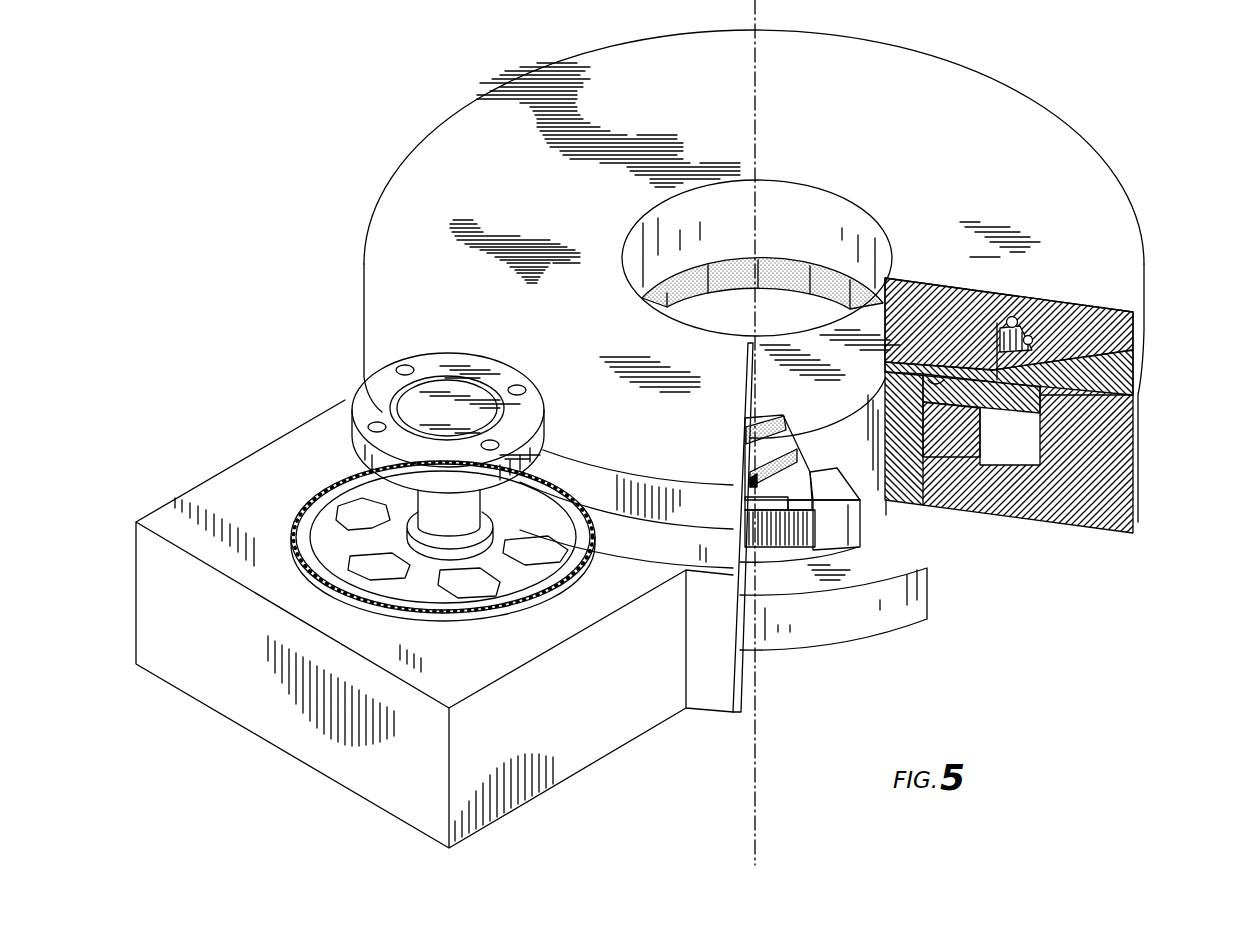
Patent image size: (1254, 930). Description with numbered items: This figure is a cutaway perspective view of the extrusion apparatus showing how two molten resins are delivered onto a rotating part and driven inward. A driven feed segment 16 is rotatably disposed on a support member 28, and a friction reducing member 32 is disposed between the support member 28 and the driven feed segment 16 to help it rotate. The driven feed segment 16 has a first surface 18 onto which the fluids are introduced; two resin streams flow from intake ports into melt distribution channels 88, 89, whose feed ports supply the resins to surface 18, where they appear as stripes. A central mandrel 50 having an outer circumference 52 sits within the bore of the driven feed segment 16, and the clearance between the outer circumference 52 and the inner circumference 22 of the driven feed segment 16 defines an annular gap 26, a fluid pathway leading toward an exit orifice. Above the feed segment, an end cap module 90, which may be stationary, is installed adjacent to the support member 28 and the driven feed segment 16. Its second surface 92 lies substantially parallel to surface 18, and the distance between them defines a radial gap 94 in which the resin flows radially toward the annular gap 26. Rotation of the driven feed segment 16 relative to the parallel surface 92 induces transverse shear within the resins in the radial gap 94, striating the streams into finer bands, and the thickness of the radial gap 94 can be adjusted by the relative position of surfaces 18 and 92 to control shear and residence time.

The driven feed segment 16 is at (881, 512).
The first surface 18 is at (794, 478).
The inner circumference 22 is at (788, 280).
The annular gap 26 is at (887, 516).
The support member 28 is at (1137, 450).
The friction reducing member 32 is at (840, 545).
The central mandrel 50 is at (815, 356).
The outer circumference 52 is at (848, 461).
The melt distribution channel 88 is at (1057, 300).
The melt distribution channel 89 is at (1017, 298).
The end cap module 90 is at (1117, 168).
The second surface 92 is at (936, 376).
The radial gap 94 is at (998, 374).